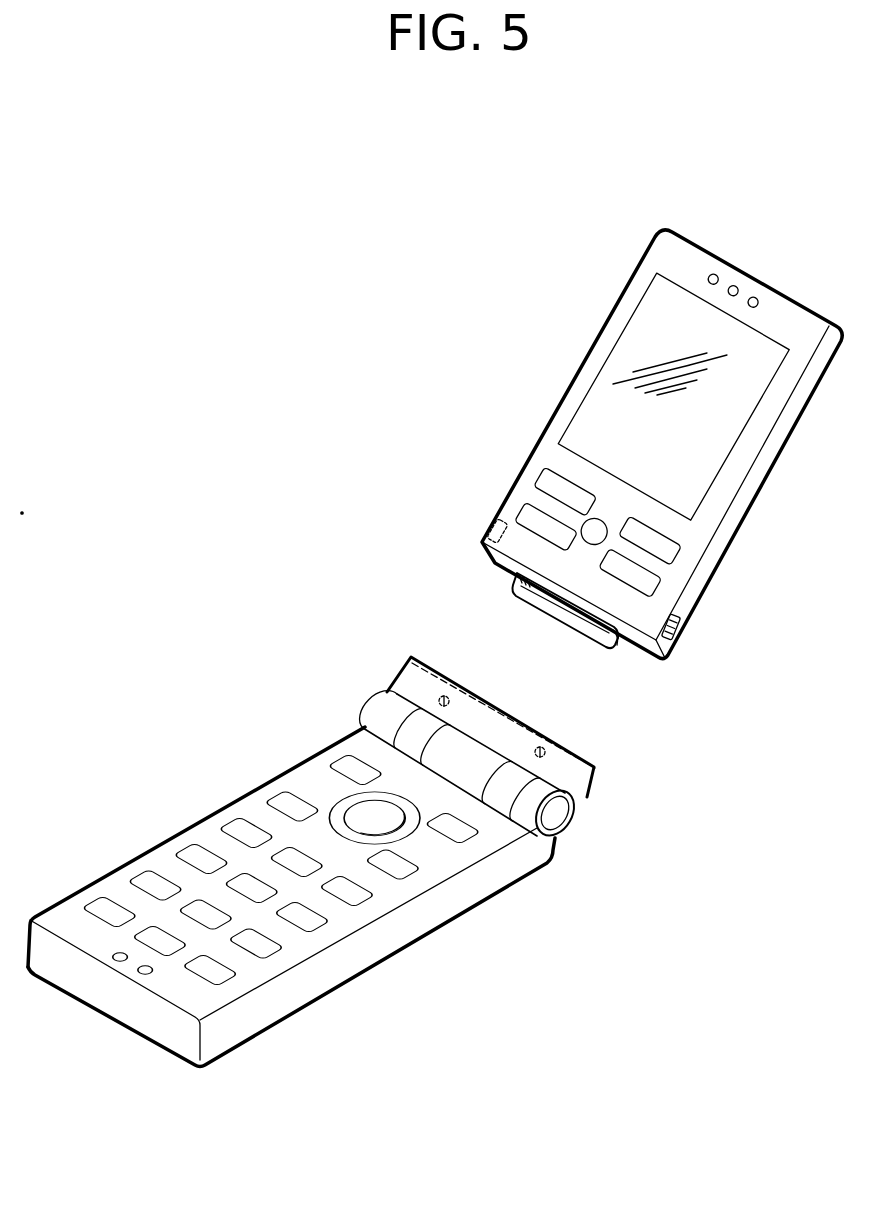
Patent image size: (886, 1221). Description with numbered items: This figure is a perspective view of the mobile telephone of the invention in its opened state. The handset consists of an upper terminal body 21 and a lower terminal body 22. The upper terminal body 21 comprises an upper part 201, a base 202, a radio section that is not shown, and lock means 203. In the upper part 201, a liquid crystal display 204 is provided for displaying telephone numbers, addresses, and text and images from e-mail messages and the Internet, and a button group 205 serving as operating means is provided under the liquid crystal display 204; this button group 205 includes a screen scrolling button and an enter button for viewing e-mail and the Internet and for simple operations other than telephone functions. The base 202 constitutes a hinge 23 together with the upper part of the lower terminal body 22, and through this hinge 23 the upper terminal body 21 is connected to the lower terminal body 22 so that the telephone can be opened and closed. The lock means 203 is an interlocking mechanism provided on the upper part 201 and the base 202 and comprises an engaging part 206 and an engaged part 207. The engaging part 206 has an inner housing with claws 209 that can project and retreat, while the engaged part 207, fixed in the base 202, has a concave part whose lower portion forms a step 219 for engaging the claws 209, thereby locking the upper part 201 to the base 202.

The upper terminal body 21 is at (768, 280).
The upper part 201 is at (637, 275).
The liquid crystal display 204 is at (613, 370).
The button group 205 is at (552, 482).
The engaging part 206 is at (514, 580).
The lock means 203 is at (682, 637).
The claws 209 is at (621, 641).
The lower terminal body 22 is at (313, 988).
The hinge 23 is at (567, 835).
The base 202 is at (590, 797).
The engaged part 207 is at (411, 659).
The step 219 is at (416, 675).